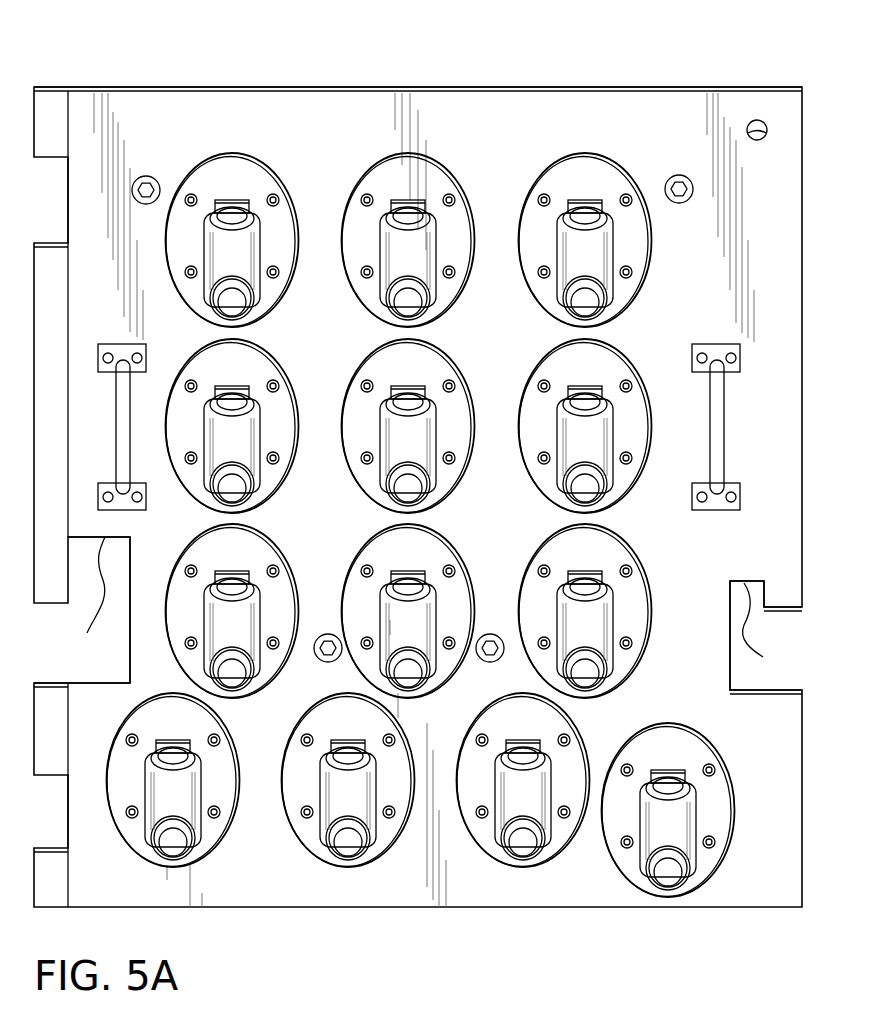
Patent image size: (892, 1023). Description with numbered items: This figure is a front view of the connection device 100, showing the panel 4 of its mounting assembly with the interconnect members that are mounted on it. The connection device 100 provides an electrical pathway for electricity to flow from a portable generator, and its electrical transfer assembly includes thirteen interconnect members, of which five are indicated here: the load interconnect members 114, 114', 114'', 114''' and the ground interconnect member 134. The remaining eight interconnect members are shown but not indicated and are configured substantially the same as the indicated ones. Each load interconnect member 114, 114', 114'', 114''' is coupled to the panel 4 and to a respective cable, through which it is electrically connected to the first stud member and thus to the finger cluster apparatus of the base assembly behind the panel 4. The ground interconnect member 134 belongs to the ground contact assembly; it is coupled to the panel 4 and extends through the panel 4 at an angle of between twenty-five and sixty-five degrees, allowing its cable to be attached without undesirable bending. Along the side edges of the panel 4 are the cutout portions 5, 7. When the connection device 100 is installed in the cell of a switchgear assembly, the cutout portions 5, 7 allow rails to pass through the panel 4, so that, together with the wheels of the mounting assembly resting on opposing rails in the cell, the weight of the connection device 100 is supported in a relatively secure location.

The connection device 100 is at (516, 915).
The panel 4 is at (515, 88).
The cutout portion 5 is at (766, 635).
The cutout portion 7 is at (82, 610).
The load interconnect member 114 is at (627, 611).
The load interconnect member 114' is at (614, 407).
The load interconnect member 114'' is at (608, 218).
The load interconnect member 114''' is at (578, 775).
The ground interconnect member 134 is at (715, 748).